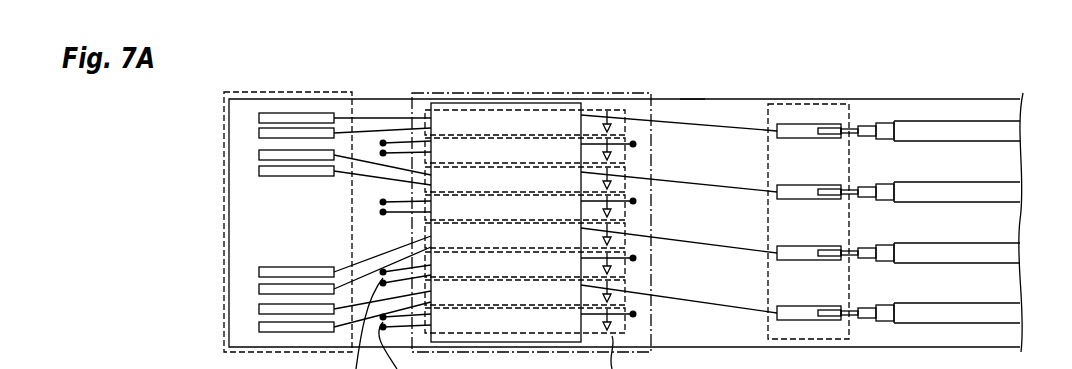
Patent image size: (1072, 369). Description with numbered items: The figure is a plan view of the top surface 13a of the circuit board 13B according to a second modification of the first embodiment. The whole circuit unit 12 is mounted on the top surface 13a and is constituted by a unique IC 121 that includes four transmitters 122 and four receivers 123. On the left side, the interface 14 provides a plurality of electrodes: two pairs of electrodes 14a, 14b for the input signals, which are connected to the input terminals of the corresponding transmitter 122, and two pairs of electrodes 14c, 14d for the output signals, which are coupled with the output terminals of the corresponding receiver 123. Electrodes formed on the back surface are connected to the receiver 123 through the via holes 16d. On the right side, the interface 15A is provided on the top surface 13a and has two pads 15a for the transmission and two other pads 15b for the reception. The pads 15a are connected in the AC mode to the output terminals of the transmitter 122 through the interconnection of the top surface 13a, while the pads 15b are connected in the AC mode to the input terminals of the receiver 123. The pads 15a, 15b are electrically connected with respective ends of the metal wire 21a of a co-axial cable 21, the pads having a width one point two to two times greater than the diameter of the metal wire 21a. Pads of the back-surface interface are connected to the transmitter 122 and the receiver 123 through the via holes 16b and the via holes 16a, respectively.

The circuit unit 12 is at (627, 92).
The IC 121 is at (433, 102).
The transmitter 122 is at (525, 239).
The receiver 123 is at (525, 221).
The circuit board 13B is at (733, 99).
The top surface 13a is at (691, 107).
The interface 14 is at (301, 92).
The electrode 14a is at (319, 117).
The electrode 14b is at (273, 132).
The electrode 14c is at (315, 273).
The electrode 14d is at (276, 292).
The interface 15A is at (820, 104).
The pad 15a is at (793, 125).
The pad 15b is at (803, 246).
The via hole 16a is at (633, 258).
The via hole 16b is at (633, 144).
The via hole 16d is at (383, 153).
The co-axial cable 21 is at (965, 130).
The metal wire 21a is at (830, 128).